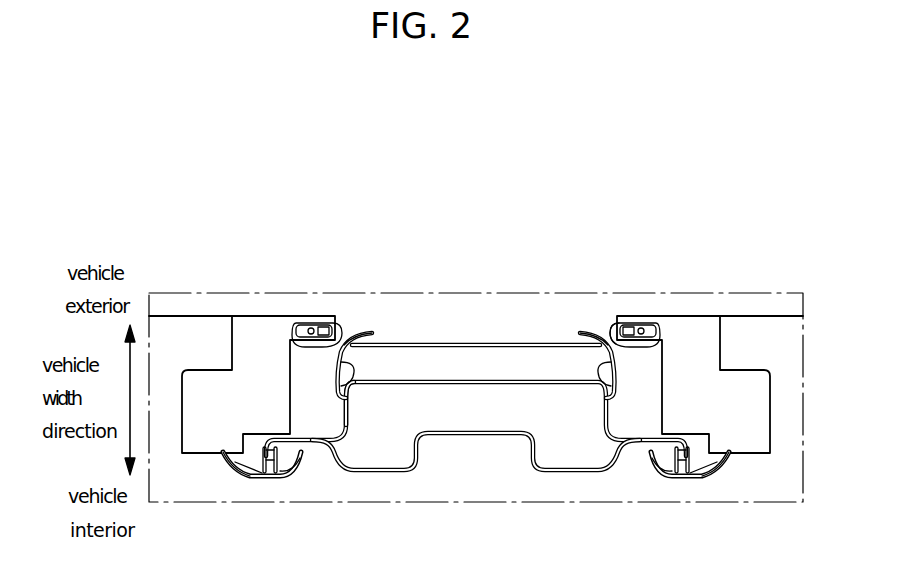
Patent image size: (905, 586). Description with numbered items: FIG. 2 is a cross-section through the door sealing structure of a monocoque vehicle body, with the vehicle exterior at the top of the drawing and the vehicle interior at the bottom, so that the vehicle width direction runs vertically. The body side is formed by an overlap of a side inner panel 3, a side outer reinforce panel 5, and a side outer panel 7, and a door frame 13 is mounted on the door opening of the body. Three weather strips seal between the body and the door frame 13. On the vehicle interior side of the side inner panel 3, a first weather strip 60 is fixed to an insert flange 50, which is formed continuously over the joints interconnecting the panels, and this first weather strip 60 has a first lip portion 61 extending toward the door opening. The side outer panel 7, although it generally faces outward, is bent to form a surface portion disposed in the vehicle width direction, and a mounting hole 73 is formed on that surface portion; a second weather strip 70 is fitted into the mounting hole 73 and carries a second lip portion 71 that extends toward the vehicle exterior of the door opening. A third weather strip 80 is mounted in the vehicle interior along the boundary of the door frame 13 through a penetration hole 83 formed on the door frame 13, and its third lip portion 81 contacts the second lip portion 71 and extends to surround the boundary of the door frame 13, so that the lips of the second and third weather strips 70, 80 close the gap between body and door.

The side inner panel 3 is at (503, 435).
The side outer reinforce panel 5 is at (458, 384).
The side outer panel 7 is at (489, 343).
The door frame 13 is at (248, 327).
The insert flange 50 is at (300, 453).
The first weather strip 60 is at (263, 497).
The first lip portion 61 is at (223, 452).
The second weather strip 70 is at (373, 310).
The second lip portion 71 is at (373, 333).
The mounting hole 73 is at (350, 390).
The third weather strip 80 is at (345, 310).
The third lip portion 81 is at (301, 323).
The penetration hole 83 is at (650, 325).